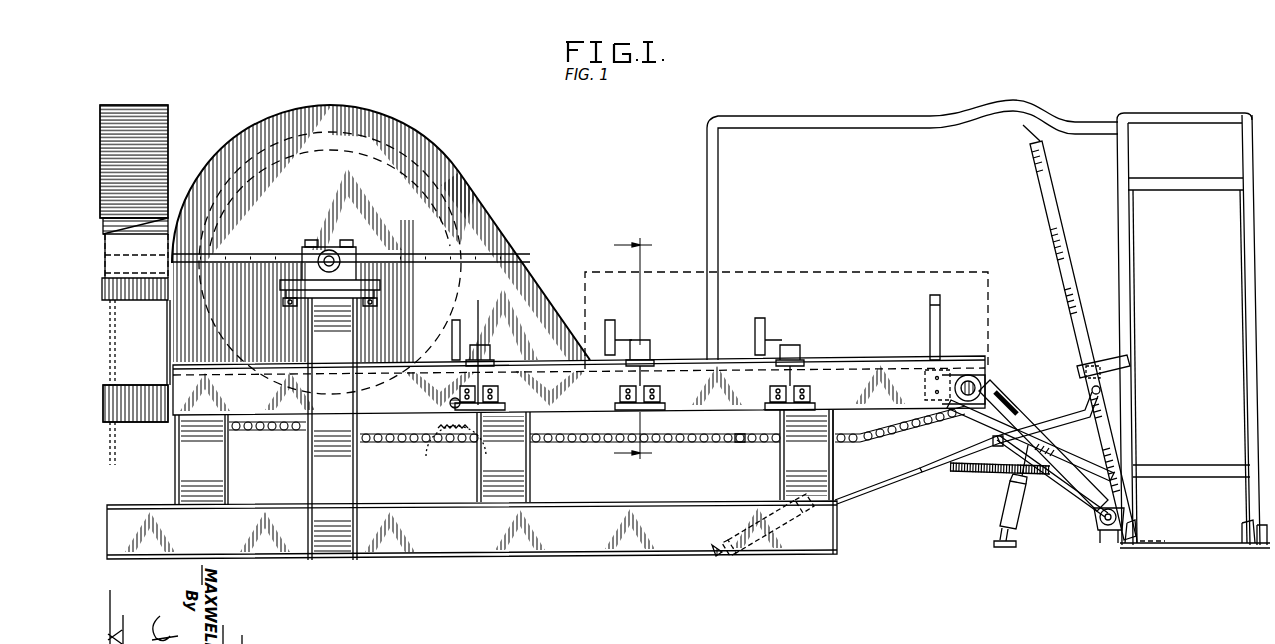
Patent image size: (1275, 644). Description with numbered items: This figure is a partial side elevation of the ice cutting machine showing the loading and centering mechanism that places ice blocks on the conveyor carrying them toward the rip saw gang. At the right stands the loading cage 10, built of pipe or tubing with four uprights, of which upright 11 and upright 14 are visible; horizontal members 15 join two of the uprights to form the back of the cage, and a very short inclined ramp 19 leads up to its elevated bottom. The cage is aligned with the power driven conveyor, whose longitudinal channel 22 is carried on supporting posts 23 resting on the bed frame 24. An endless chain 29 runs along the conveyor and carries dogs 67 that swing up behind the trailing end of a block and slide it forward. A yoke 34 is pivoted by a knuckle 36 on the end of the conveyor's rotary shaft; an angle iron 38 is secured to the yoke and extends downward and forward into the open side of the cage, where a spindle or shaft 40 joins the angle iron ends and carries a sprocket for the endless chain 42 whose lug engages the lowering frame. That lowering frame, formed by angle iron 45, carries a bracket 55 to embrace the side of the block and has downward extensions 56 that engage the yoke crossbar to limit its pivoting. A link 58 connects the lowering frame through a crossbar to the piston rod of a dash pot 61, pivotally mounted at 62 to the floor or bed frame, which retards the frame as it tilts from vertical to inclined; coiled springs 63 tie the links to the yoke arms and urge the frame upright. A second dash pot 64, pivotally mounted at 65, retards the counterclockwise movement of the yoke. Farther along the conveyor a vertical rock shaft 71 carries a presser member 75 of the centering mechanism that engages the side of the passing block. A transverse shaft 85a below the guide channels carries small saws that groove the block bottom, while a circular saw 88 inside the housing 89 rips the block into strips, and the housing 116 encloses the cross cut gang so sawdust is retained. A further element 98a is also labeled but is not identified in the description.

The cage 10 is at (1193, 115).
The upright 11 is at (1131, 282).
The upright 14 is at (1246, 332).
The horizontal members 15 is at (1202, 166).
The inclined ramp 19 is at (1180, 541).
The channel 22 is at (886, 372).
The supporting posts 23 is at (835, 459).
The bed frame 24 is at (834, 540).
The endless chain 29 is at (704, 442).
The yoke 34 is at (1000, 410).
The knuckle 36 is at (982, 382).
The angle iron 38 is at (1072, 496).
The spindle or shaft 40 is at (1097, 530).
The endless chain 42 is at (1078, 462).
The angle iron 45 is at (1058, 236).
The bracket 55 is at (1126, 373).
The extensions 56 is at (1085, 368).
The link 58 is at (990, 442).
The dash pot 61 is at (775, 550).
The pivotal mounting 62 is at (712, 550).
The coiled springs 63 is at (975, 474).
The second dash pot 64 is at (1020, 518).
The pivotal mounting 65 is at (994, 541).
The dogs 67 is at (740, 446).
The rock shaft 71 is at (655, 378).
The presser member 75 is at (766, 333).
The transverse shaft 85a is at (452, 402).
The circular saw 88 is at (404, 202).
The housing 89 is at (376, 132).
The saw blade 98a is at (438, 427).
The housing 116 is at (124, 106).